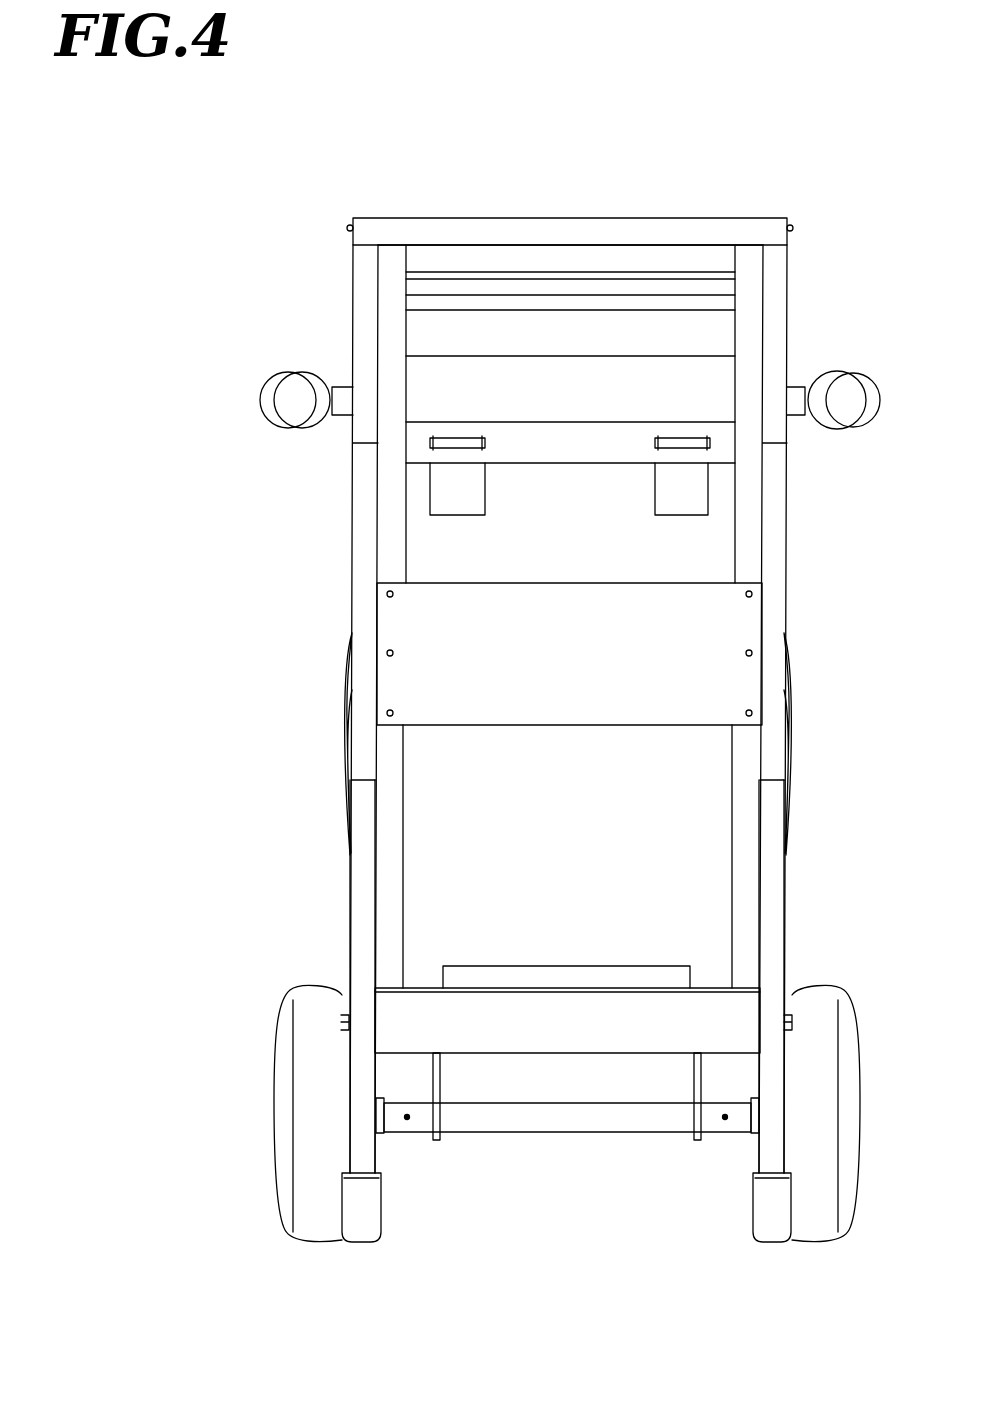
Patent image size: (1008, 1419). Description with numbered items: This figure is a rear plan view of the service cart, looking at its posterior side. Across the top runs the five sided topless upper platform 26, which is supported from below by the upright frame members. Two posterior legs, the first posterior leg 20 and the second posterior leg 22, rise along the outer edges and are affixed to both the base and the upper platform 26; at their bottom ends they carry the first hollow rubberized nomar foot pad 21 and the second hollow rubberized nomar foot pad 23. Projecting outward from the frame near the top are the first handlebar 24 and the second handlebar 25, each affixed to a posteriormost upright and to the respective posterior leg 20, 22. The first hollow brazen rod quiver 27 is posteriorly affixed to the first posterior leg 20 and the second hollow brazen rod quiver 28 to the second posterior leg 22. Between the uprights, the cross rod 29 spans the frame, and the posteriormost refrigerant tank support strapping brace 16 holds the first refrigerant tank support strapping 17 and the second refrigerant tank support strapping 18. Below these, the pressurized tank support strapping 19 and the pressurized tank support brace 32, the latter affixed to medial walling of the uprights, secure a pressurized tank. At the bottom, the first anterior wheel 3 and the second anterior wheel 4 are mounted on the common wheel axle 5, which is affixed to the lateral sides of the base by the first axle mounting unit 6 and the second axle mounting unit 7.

The first anterior wheel 3 is at (830, 1010).
The second anterior wheel 4 is at (302, 1010).
The common wheel axle 5 is at (553, 1117).
The first axle mounting unit 6 is at (697, 1140).
The second axle mounting unit 7 is at (437, 1140).
The posteriormost refrigerant tank support strapping brace 16 is at (512, 448).
The first refrigerant tank support strapping 17 is at (698, 500).
The second refrigerant tank support strapping 18 is at (452, 495).
The pressurized tank support strapping 19 is at (347, 663).
The first posterior leg 20 is at (778, 872).
The first hollow rubberized nomar foot pad 21 is at (770, 1227).
The second posterior leg 22 is at (365, 862).
The second hollow rubberized nomar foot pad 23 is at (362, 1227).
The first handlebar 24 is at (797, 403).
The second handlebar 25 is at (343, 398).
The five sided topless upper platform 26 is at (608, 232).
The first hollow brazen rod quiver 27 is at (778, 596).
The second hollow brazen rod quiver 28 is at (363, 580).
The cross rod 29 is at (705, 355).
The pressurized tank support brace 32 is at (578, 612).